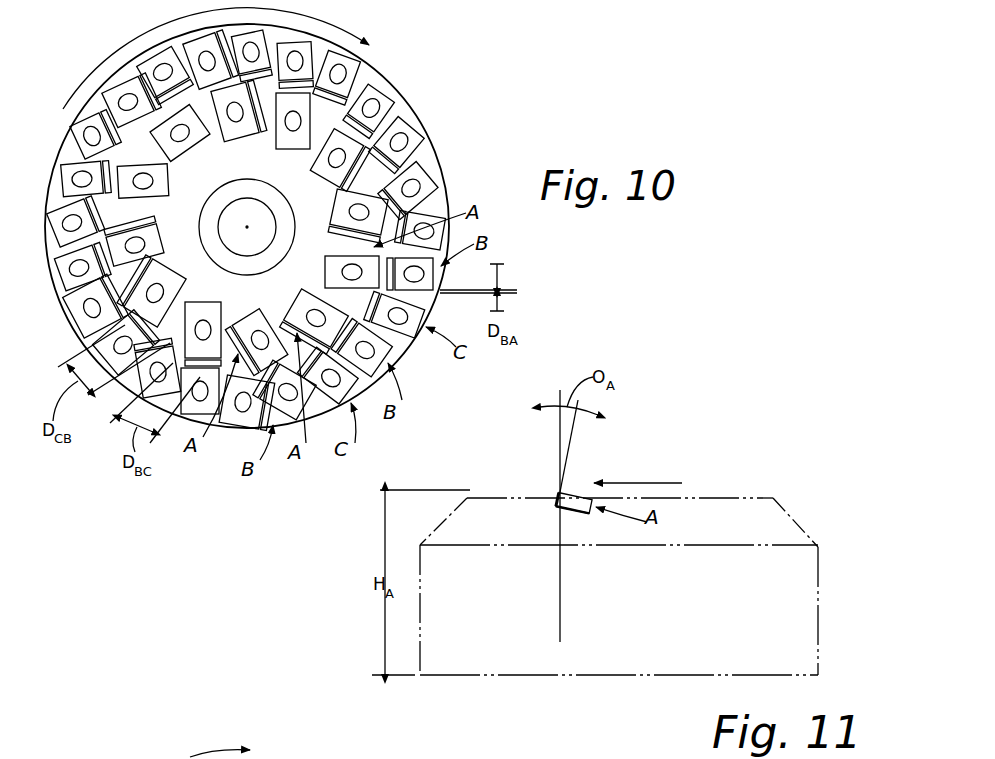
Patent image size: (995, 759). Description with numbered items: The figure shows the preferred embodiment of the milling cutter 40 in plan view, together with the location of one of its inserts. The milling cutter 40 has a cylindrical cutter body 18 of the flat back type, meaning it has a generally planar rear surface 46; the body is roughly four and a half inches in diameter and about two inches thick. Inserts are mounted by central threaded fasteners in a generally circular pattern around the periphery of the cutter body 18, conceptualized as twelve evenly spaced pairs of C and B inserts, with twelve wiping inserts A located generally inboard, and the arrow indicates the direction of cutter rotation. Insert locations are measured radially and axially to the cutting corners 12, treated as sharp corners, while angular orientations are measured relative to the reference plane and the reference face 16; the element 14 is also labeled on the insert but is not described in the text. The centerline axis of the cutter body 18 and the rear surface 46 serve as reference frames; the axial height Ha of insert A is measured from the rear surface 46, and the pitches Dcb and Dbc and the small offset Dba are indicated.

In FIG. 10, the milling cutter 40 is at (388, 76).
In FIG. 11, the milling cutter 40 is at (802, 508).
In FIG. 10, the cutter body 18 is at (402, 110).
In FIG. 11, the cutter body 18 is at (797, 612).
In FIG. 11, the rear surface 46 is at (693, 677).
In FIG. 11, the cutting corner 12 is at (557, 490).
In FIG. 11, the insert axis 14 is at (570, 492).
In FIG. 11, the face 16 is at (558, 502).